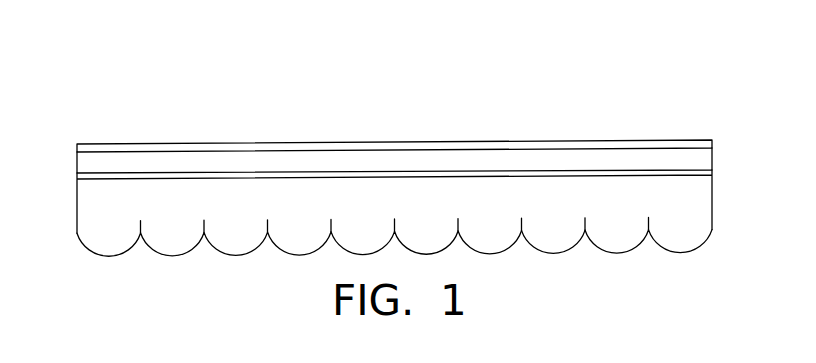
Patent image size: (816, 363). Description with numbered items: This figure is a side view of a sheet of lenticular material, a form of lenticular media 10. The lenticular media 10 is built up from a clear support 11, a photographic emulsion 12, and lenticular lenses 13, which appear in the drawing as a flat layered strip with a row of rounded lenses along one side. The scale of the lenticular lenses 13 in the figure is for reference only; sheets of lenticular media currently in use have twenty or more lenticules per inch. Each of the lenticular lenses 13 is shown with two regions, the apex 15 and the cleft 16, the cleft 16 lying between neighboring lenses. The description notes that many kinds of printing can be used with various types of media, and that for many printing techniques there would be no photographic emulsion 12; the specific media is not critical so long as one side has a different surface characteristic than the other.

The lenticular media 10 is at (145, 52).
The clear support 11 is at (185, 165).
The photographic emulsion 12 is at (322, 145).
The lenticular lenses 13 is at (430, 195).
The apex 15 is at (553, 252).
The cleft 16 is at (585, 230).